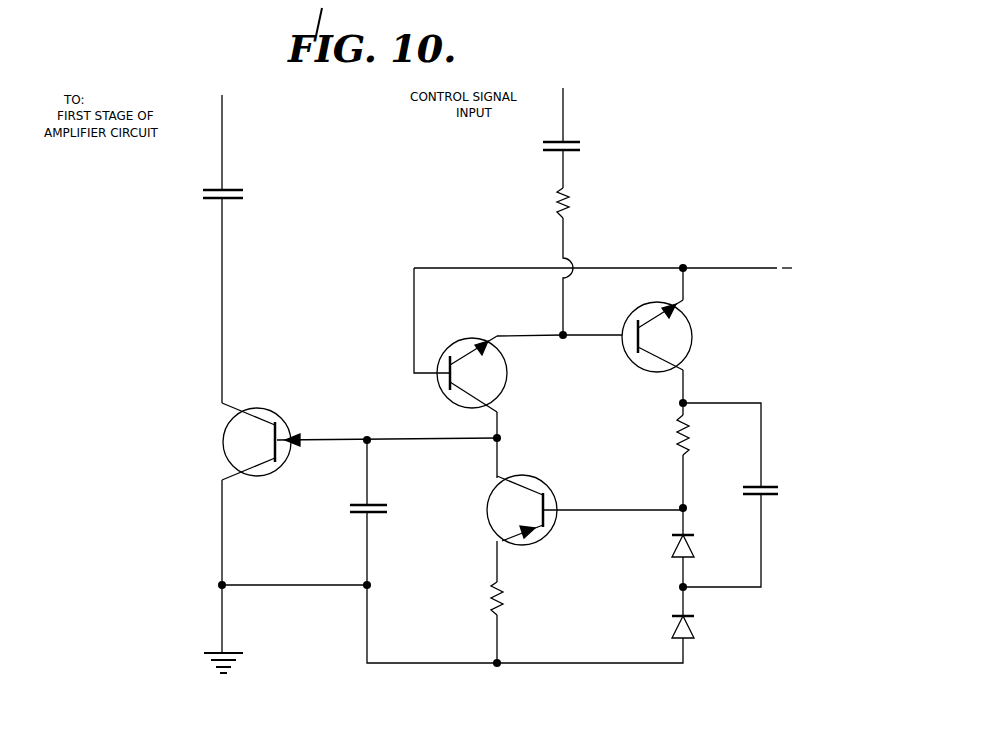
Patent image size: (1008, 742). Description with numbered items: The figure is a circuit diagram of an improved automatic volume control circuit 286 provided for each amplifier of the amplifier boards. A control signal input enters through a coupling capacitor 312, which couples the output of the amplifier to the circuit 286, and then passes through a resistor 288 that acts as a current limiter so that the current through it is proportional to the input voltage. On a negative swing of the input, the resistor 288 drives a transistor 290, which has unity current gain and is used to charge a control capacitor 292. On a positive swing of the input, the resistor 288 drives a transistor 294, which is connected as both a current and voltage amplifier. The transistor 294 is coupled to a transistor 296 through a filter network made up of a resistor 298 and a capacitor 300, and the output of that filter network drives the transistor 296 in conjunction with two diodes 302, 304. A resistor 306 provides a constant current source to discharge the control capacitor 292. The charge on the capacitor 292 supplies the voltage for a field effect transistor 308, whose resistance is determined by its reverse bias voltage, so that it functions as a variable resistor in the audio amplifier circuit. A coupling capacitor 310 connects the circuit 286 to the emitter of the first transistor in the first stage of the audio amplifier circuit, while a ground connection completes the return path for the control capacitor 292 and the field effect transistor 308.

The circuit 286 is at (752, 648).
The resistor 288 is at (569, 204).
The transistor 290 is at (468, 338).
The control capacitor 292 is at (375, 514).
The transistor 294 is at (693, 339).
The transistor 296 is at (553, 478).
The resistor 298 is at (680, 445).
The capacitor 300 is at (766, 482).
The diode 302 is at (676, 546).
The diode 304 is at (676, 630).
The resistor 306 is at (498, 612).
The field effect transistor 308 is at (223, 452).
The coupling capacitor 310 is at (234, 190).
The coupling capacitor 312 is at (568, 140).